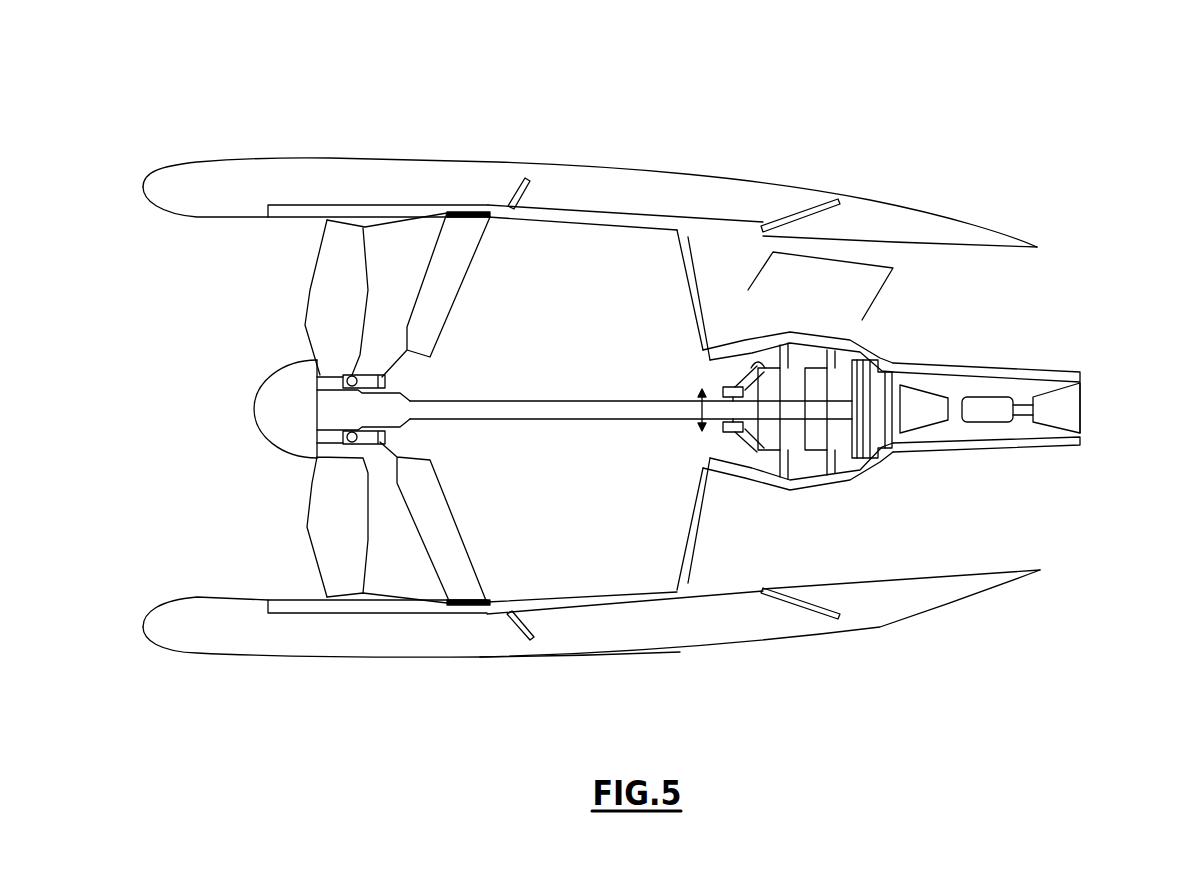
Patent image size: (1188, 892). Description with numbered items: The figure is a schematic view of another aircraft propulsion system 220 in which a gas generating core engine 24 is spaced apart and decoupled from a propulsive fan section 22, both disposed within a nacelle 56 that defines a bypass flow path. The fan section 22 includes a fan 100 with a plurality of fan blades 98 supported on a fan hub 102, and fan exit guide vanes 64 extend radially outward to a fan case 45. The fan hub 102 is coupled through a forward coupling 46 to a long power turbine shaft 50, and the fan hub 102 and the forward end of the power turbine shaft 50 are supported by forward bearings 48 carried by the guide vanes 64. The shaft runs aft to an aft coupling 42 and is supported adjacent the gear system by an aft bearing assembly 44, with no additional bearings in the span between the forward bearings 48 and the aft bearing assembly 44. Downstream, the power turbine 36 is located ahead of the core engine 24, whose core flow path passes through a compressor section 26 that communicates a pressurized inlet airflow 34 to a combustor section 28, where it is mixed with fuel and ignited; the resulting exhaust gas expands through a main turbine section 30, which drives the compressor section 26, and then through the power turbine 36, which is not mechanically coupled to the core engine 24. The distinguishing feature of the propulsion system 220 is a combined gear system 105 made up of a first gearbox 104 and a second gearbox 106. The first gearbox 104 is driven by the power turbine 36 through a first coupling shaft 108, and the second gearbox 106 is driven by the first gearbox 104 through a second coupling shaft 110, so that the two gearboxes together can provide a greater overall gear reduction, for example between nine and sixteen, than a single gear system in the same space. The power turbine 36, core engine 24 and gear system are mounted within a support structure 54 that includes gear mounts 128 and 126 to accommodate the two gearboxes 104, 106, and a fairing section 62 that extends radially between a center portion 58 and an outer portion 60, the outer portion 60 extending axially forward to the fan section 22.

The aircraft propulsion system 220 is at (1040, 111).
The fan section 22 is at (265, 158).
The fan case 45 is at (370, 213).
The fan blades 98 is at (298, 285).
The fan exit guide vanes 64 is at (470, 278).
The fan 100 is at (265, 330).
The fan hub 102 is at (338, 416).
The forward coupling 46 is at (407, 420).
The forward bearings 48 is at (412, 441).
The power turbine shaft 50 is at (560, 422).
The aft coupling 42 is at (698, 422).
The aft bearing assembly 44 is at (714, 441).
The fairing section 62 is at (668, 288).
The center portion 58 is at (800, 479).
The first gearbox 104 is at (830, 366).
The second coupling shaft 110 is at (787, 481).
The combined gear system 105 is at (838, 258).
The gear mount 126 is at (757, 361).
The second gearbox 106 is at (770, 368).
The gear mount 128 is at (817, 364).
The first coupling shaft 108 is at (845, 473).
The power turbine 36 is at (881, 462).
The main turbine section 30 is at (916, 424).
The combustor section 28 is at (992, 416).
The compressor section 26 is at (1073, 418).
The core engine 24 is at (1038, 351).
The pressurized inlet airflow 34 is at (1098, 381).
The nacelle 56 is at (386, 640).
The outer portion 60 is at (638, 603).
The support structure 54 is at (562, 636).